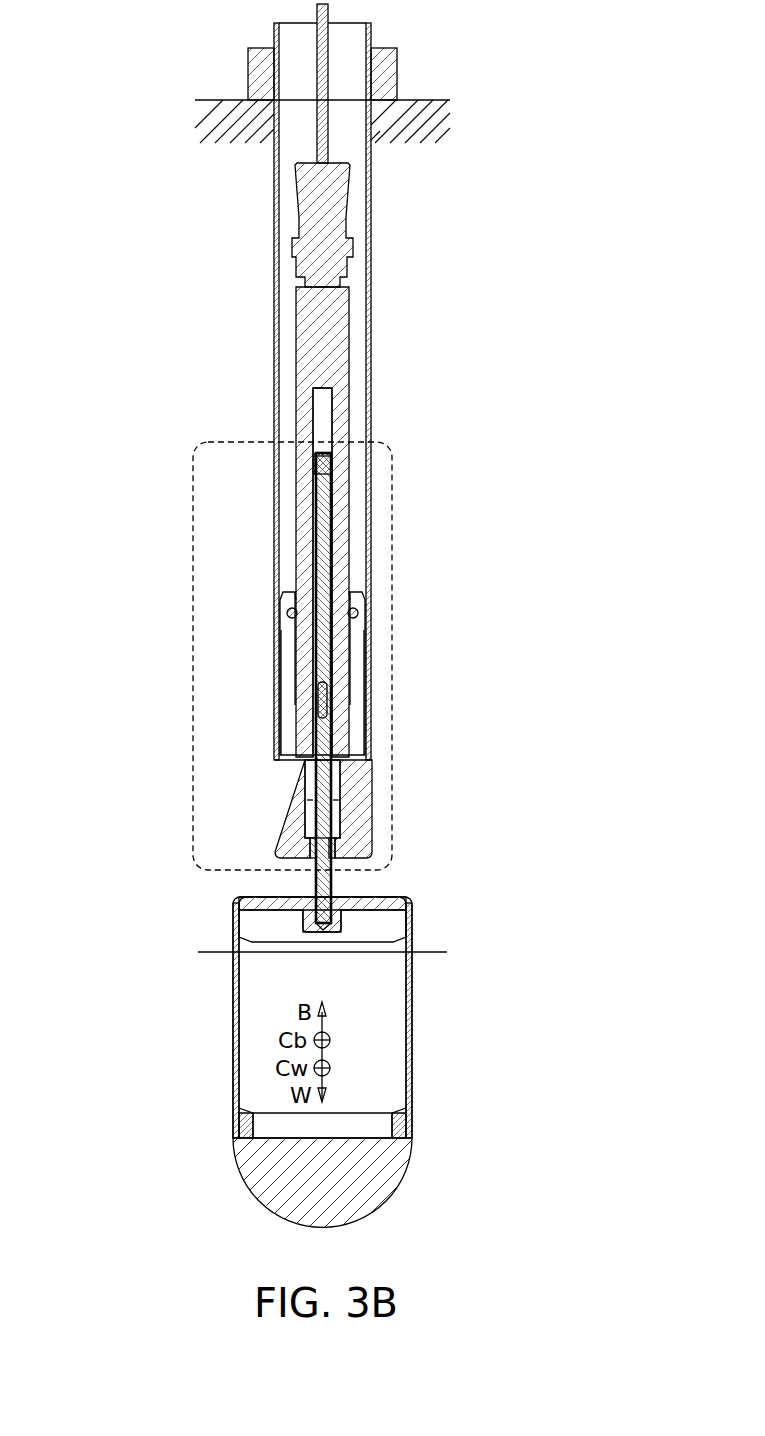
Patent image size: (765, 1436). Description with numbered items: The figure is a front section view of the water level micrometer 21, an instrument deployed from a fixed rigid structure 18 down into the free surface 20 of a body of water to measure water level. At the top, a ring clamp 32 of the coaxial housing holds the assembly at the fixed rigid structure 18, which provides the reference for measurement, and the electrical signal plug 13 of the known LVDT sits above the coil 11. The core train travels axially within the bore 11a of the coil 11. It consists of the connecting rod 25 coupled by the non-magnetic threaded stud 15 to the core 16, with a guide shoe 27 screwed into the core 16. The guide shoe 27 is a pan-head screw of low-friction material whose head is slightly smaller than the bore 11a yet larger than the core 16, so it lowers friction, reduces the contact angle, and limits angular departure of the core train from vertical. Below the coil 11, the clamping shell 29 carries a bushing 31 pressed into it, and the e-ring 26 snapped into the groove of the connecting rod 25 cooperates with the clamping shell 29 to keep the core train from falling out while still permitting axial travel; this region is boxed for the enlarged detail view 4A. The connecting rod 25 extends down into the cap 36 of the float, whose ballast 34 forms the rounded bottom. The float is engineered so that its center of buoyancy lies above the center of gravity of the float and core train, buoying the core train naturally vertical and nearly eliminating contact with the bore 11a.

The ring clamp 32 is at (258, 48).
The fixed rigid structure 18 is at (240, 100).
The electrical signal plug 13 is at (300, 210).
The coil 11 is at (300, 338).
The bore 11a is at (318, 415).
The guide shoe 27 is at (318, 465).
The core 16 is at (320, 537).
The threaded stud 15 is at (318, 690).
The connecting rod 25 is at (320, 738).
The e-ring 26 is at (312, 800).
The clamping shell 29 is at (280, 813).
The bushing 31 is at (310, 845).
The detail view region 4A is at (392, 658).
The cap 36 is at (260, 899).
The free surface 20 is at (216, 952).
The ballast 34 is at (246, 1165).
The water level micrometer 21 is at (195, 1217).